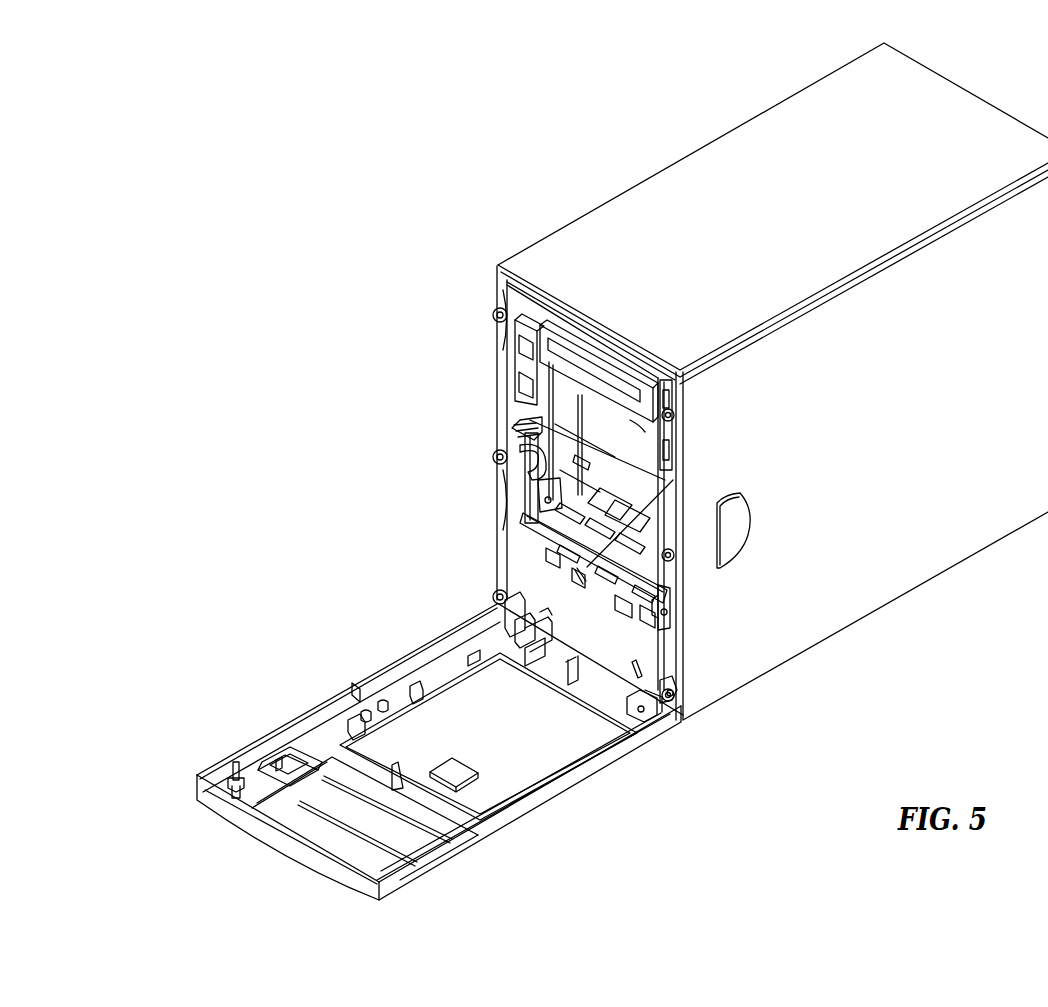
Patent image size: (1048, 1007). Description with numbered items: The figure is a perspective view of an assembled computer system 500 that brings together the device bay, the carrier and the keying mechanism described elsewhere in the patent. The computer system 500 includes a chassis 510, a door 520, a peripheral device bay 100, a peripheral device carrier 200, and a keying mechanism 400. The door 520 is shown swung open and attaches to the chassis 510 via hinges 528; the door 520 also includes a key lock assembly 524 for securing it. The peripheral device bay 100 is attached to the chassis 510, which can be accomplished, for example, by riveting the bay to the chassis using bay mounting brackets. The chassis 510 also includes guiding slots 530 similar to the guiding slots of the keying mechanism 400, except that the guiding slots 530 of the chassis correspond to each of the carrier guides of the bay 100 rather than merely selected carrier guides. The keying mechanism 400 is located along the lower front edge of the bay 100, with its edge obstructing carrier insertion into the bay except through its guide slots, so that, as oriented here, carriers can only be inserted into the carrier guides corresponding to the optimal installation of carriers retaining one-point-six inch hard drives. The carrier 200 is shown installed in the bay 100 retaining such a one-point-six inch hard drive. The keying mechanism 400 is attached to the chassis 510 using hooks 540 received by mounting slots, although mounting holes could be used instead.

The computer system 500 is at (475, 141).
The chassis 510 is at (522, 577).
The door 520 is at (355, 683).
The key lock assembly 524 is at (230, 773).
The hinges 528 is at (492, 623).
The peripheral device carrier 200 is at (525, 483).
The guiding slots 530 is at (633, 457).
The peripheral device bay 100 is at (655, 535).
The keying mechanism 400 is at (660, 608).
The hooks 540 is at (625, 582).